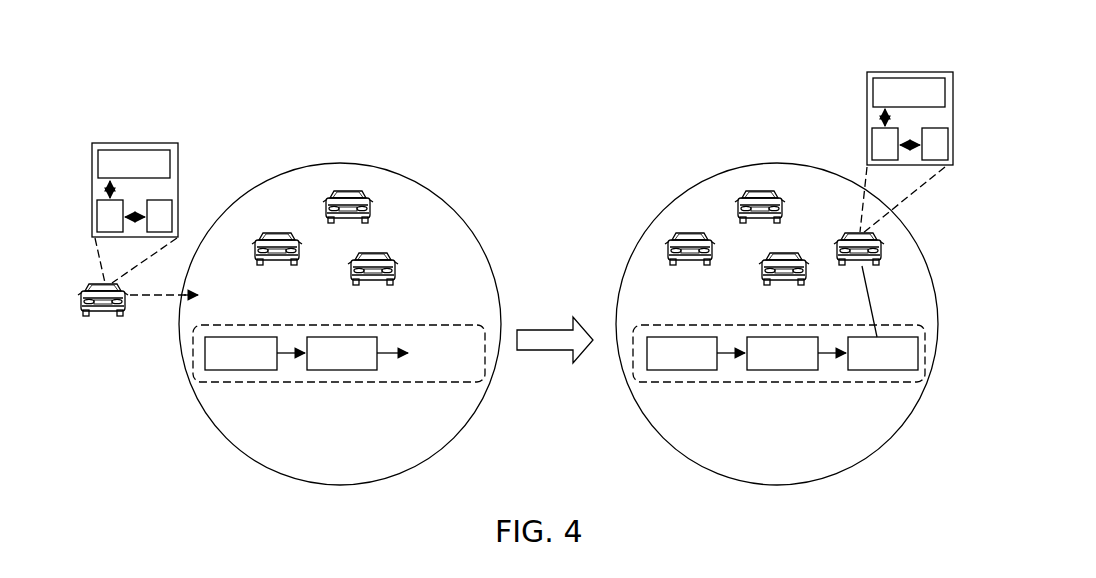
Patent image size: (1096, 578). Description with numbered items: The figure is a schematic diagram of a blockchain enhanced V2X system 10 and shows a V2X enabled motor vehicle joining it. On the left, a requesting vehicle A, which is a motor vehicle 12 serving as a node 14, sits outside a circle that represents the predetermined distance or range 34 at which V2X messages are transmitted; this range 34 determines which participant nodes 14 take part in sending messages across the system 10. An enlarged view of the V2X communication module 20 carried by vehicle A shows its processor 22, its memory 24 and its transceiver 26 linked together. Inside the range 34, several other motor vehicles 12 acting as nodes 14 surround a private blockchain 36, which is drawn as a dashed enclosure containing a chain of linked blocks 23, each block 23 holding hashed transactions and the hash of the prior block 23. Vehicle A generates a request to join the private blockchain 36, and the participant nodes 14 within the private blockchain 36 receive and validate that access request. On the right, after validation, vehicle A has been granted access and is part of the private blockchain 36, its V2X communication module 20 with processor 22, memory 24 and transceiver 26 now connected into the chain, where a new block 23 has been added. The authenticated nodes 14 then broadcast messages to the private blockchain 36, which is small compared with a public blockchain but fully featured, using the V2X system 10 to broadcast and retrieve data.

The blockchain based V2X system 10 is at (624, 115).
The motor vehicle 12 is at (548, 192).
The node 14 is at (372, 252).
The vehicle A is at (103, 317).
The V2X communication module 20 is at (522, 133).
The processor 22 is at (497, 180).
The memory 24 is at (547, 180).
The transceiver 26 is at (521, 128).
The block 23 is at (240, 370).
The predetermined distance or range 34 is at (437, 197).
The private blockchain 36 is at (447, 325).